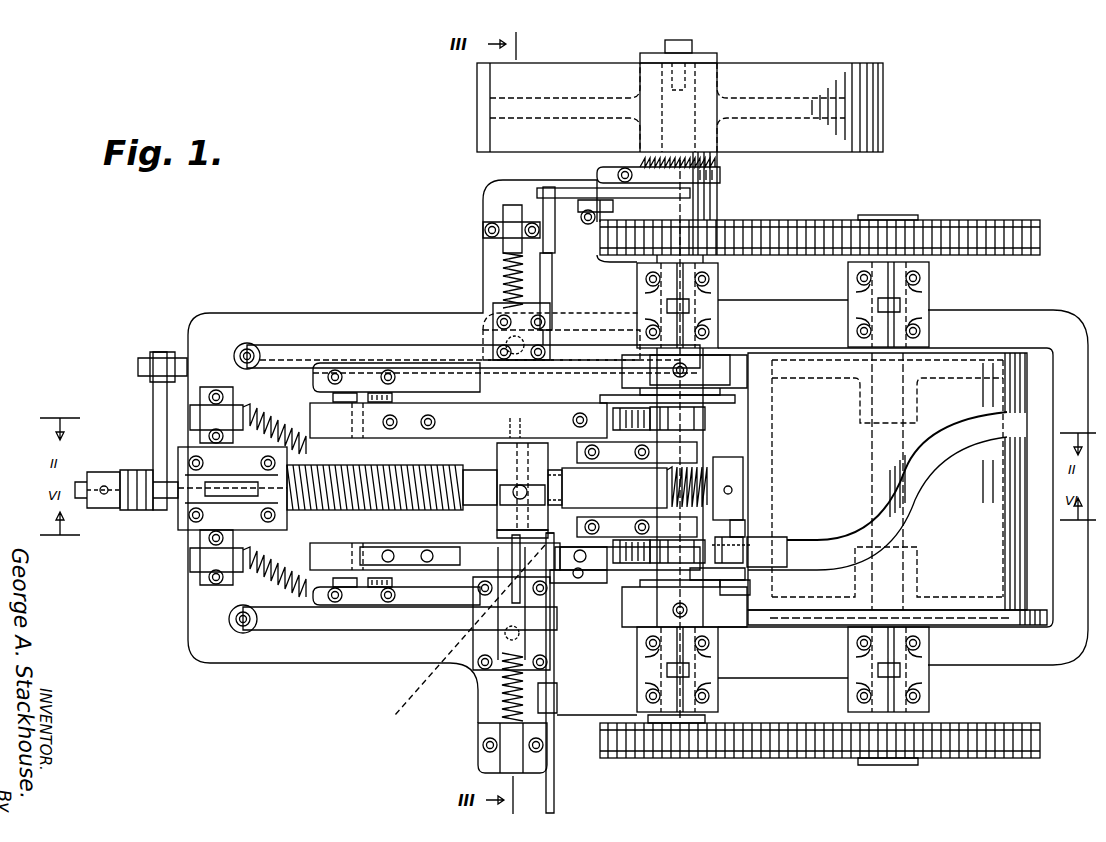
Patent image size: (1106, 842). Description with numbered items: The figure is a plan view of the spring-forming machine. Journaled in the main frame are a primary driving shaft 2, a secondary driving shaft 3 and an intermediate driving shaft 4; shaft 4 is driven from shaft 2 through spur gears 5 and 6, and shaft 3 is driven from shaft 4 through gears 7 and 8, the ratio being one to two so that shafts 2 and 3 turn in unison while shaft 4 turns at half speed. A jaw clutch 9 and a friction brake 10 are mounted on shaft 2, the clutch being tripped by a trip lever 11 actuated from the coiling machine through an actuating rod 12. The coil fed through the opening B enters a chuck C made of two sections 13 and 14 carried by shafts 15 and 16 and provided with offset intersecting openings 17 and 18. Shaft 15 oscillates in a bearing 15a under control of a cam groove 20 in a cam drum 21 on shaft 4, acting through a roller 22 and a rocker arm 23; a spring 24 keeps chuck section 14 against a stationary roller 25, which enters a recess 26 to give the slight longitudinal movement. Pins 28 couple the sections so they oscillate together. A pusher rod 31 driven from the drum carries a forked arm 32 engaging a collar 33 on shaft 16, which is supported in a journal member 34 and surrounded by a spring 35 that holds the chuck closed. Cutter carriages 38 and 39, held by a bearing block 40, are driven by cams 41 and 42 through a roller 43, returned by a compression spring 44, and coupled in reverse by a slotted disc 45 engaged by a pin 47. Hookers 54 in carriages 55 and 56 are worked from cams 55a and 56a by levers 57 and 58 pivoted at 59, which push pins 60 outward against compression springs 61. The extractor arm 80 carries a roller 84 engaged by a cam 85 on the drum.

The primary driving shaft 2 is at (720, 100).
The secondary driving shaft 3 is at (670, 760).
The intermediate driving shaft 4 is at (905, 493).
The spur gear 5 is at (720, 218).
The spur gear 6 is at (812, 220).
The gear 7 is at (786, 760).
The gear 8 is at (714, 760).
The jaw clutch 9 is at (718, 163).
The friction brake 10 is at (722, 176).
The trip lever 11 is at (632, 178).
The actuating rod 12 is at (553, 660).
The chuck section 13 is at (503, 450).
The chuck section 14 is at (533, 450).
The shaft 15 is at (700, 477).
The bearing 15a is at (606, 487).
The shaft 16 is at (75, 486).
The transverse opening 17 is at (500, 556).
The opening 18 is at (497, 530).
The cam groove 20 is at (812, 540).
The cam drum 21 is at (887, 481).
The roller 22 is at (770, 537).
The rocker arm 23 is at (745, 540).
The spring 24 is at (733, 458).
The roller 25 is at (575, 482).
The recess 26 is at (580, 496).
The pins 28 is at (470, 458).
The pusher rod 31 is at (138, 366).
The forked arm 32 is at (152, 418).
The collar 33 is at (145, 512).
The journal member 34 is at (190, 532).
The spring 35 is at (370, 512).
The carriage 38 is at (280, 410).
The carriage 39 is at (440, 568).
The bearing block 40 is at (485, 312).
The cam 41 is at (705, 425).
The cam 42 is at (730, 535).
The roller 43 is at (650, 415).
The compression spring 44 is at (302, 400).
The disc 45 is at (345, 393).
The pin 47 is at (380, 393).
The bending lever or hooker 54 is at (548, 360).
The carriage 55 is at (540, 345).
The cam 55a is at (720, 345).
The carriage 56 is at (555, 640).
The cam 56a is at (720, 612).
The lever 57 is at (430, 350).
The lever 58 is at (403, 574).
The pivot 59 is at (248, 340).
The pin 60 is at (502, 300).
The compression spring 61 is at (500, 262).
The arm 80 is at (745, 574).
The roller 84 is at (750, 590).
The cam 85 is at (818, 612).
The opening B is at (465, 636).
The chuck C is at (470, 512).